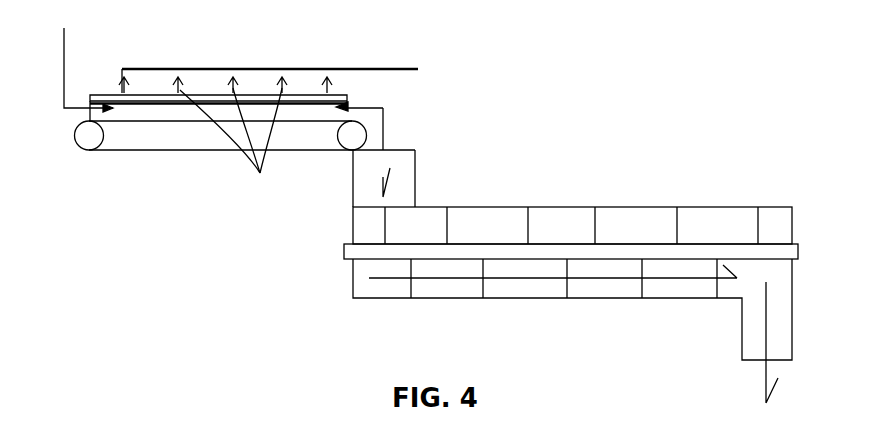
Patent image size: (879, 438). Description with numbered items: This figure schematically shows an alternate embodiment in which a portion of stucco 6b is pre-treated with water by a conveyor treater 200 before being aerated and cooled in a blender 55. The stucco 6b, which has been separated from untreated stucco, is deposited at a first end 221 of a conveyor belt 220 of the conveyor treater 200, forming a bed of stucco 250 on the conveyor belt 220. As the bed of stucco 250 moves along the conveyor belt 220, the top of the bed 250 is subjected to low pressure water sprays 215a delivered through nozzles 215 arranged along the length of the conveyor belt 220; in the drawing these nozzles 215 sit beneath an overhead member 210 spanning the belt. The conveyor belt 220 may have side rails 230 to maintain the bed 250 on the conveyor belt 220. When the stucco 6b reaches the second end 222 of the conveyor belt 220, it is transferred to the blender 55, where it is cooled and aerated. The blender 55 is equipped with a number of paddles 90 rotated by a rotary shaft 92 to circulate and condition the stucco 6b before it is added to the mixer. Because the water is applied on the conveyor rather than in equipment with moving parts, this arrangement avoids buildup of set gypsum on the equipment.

The conveyor treater 200 is at (77, 142).
The heater housing 210 is at (360, 67).
The nozzles 215 is at (282, 72).
The low pressure water sprays 215a is at (235, 148).
The conveyor belt 220 is at (200, 122).
The first end 221 is at (97, 118).
The second end 222 is at (357, 121).
The side rails 230 is at (133, 105).
The bed of stucco 250 is at (127, 122).
The stucco 6b is at (590, 325).
The rotary shaft 92 is at (346, 257).
The blender 55 is at (362, 288).
The paddles 90 is at (483, 285).